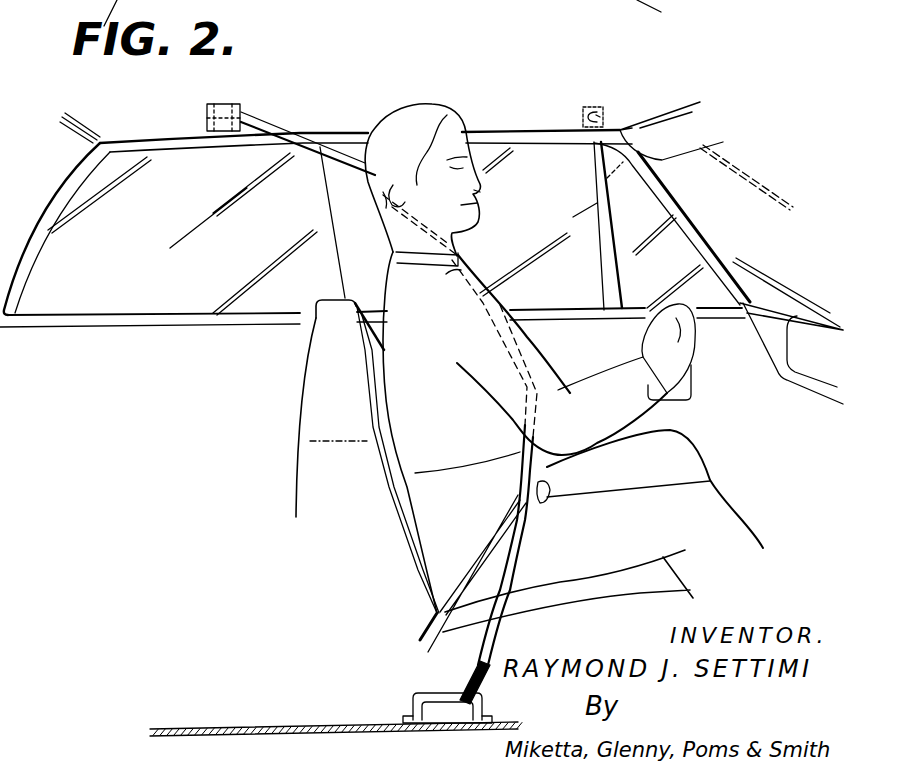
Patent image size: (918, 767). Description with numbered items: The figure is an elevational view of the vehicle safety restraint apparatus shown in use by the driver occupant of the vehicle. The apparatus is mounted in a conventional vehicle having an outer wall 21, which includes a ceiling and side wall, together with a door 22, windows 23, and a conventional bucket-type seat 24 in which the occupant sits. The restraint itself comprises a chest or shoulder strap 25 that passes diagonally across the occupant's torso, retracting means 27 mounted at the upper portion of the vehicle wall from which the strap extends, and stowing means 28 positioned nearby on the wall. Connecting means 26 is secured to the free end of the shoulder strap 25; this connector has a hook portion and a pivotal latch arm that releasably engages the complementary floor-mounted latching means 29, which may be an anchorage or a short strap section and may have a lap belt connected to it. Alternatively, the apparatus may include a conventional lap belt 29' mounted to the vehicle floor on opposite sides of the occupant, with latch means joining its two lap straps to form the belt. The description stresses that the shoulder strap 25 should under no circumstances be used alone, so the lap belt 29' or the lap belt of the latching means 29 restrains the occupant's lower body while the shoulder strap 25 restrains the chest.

The outer wall 21 is at (164, 110).
The door 22 is at (543, 333).
The windows 23 is at (172, 224).
The bucket-type seat 24 is at (305, 372).
The shoulder strap 25 is at (347, 177).
The connecting means 26 is at (470, 670).
The retracting means 27 is at (244, 108).
The stowing means 28 is at (588, 107).
The floor-mounted latching means 29 is at (430, 696).
The lap belt 29' is at (447, 573).